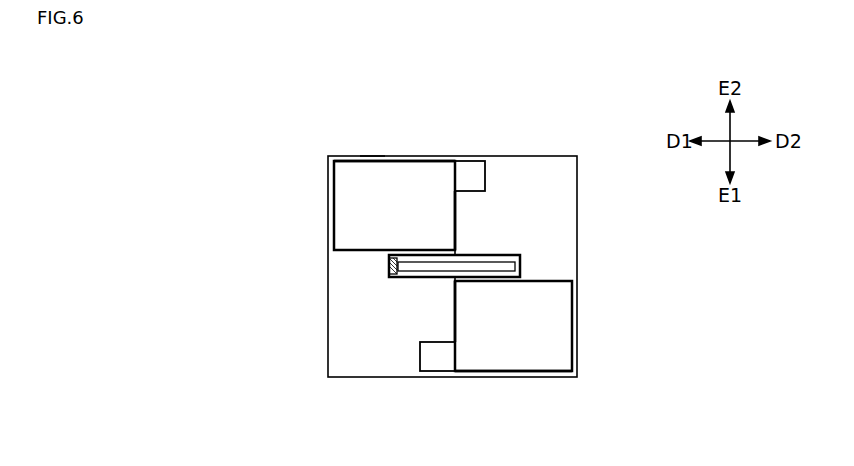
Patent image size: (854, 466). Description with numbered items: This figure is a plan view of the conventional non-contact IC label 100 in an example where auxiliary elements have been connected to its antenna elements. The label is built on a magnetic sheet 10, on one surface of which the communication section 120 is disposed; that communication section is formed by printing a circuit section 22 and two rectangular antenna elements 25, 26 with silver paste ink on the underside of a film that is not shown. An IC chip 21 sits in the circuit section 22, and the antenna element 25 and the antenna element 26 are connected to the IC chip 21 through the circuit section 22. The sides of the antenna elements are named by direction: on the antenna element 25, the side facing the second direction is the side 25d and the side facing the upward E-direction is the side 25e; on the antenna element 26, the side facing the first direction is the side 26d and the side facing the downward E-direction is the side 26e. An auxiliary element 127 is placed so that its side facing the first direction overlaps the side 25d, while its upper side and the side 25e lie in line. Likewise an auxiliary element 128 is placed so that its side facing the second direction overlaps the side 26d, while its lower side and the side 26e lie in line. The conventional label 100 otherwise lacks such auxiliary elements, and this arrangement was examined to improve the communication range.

The non-contact IC label 100 is at (336, 155).
The magnetic sheet 10 is at (328, 340).
The antenna element 25 is at (357, 208).
The side 25e is at (362, 160).
The side 25d is at (456, 214).
The communication section 120 is at (371, 159).
The auxiliary element 127 is at (468, 180).
The circuit section 22 is at (520, 262).
The IC chip 21 is at (389, 266).
The antenna element 26 is at (553, 329).
The side 26d is at (455, 318).
The side 26e is at (538, 372).
The auxiliary element 128 is at (435, 355).